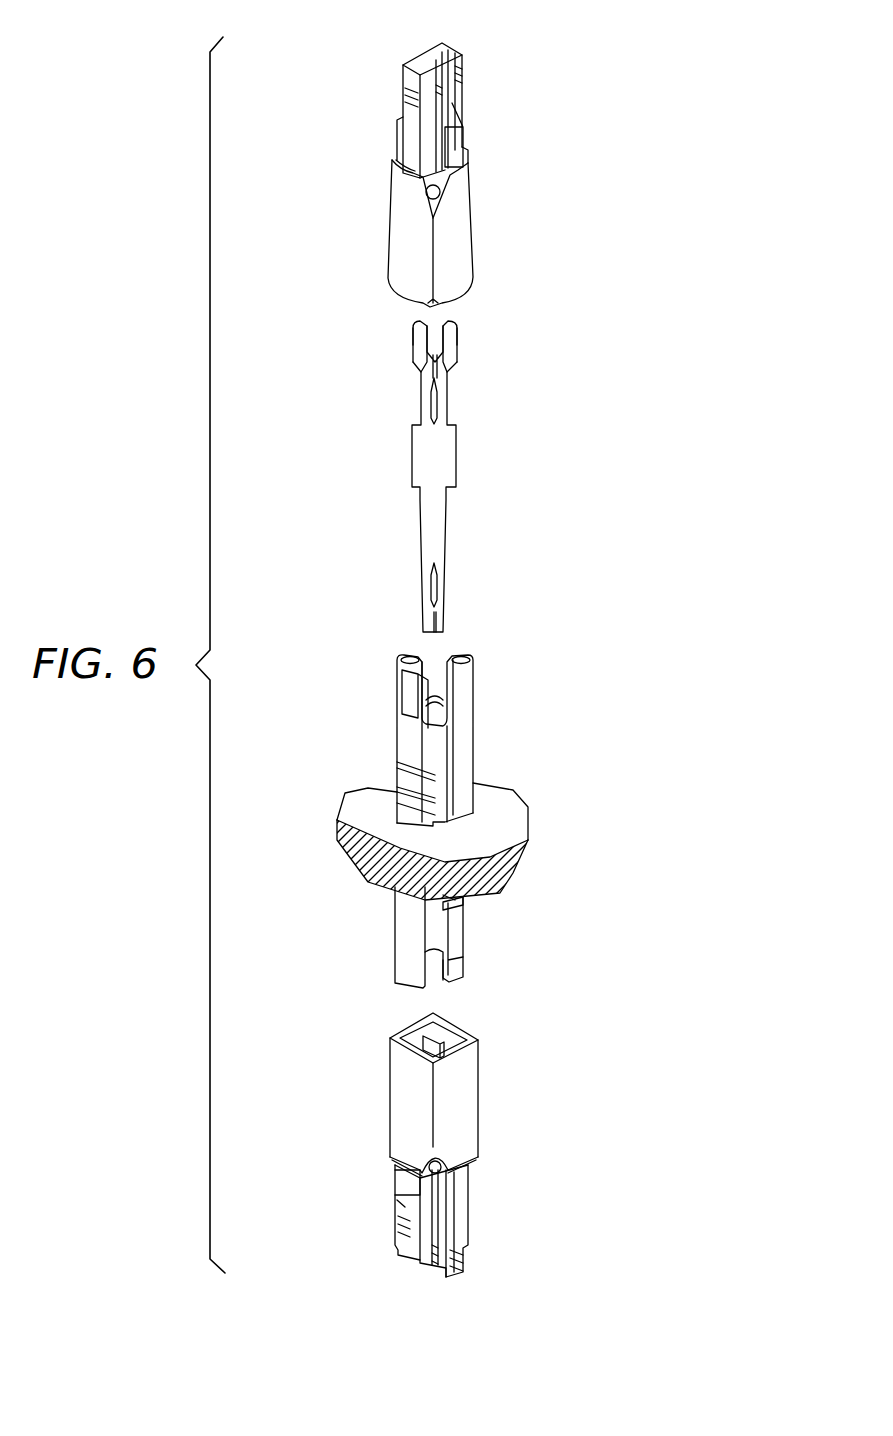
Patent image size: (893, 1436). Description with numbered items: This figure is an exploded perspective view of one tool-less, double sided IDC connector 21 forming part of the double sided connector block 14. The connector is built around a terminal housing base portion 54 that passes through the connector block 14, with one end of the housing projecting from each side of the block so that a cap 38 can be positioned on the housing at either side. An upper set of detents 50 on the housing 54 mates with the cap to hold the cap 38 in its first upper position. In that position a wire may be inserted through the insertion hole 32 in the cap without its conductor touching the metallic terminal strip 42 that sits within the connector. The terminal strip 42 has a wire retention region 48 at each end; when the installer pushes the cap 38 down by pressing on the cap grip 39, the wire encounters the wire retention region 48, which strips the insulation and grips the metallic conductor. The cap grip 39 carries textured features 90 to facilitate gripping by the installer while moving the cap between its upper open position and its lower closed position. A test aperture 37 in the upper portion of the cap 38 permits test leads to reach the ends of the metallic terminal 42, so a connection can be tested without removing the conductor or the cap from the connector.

The connector block 14 is at (500, 800).
The IDC connector 21 is at (284, 191).
The insertion hole 32 is at (427, 192).
The test aperture 37 is at (454, 143).
The cap 38 is at (453, 243).
The cap grip 39 is at (440, 58).
The metallic terminal strip 42 is at (443, 452).
The wire retention region 48 is at (418, 352).
The detents 50 is at (392, 786).
The terminal housing base portion 54 is at (478, 692).
The textured features 90 is at (442, 86).